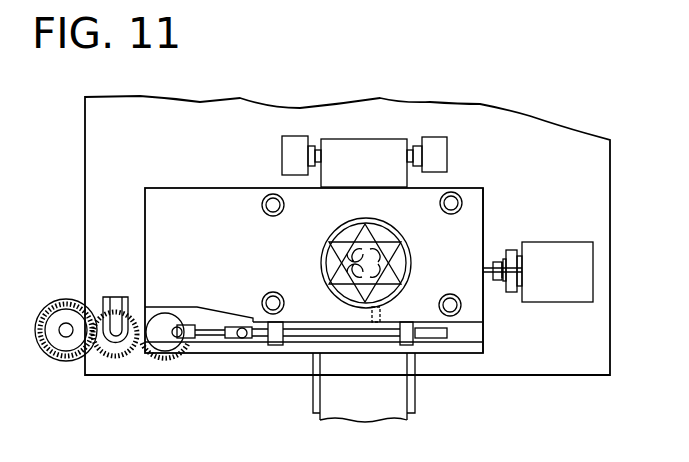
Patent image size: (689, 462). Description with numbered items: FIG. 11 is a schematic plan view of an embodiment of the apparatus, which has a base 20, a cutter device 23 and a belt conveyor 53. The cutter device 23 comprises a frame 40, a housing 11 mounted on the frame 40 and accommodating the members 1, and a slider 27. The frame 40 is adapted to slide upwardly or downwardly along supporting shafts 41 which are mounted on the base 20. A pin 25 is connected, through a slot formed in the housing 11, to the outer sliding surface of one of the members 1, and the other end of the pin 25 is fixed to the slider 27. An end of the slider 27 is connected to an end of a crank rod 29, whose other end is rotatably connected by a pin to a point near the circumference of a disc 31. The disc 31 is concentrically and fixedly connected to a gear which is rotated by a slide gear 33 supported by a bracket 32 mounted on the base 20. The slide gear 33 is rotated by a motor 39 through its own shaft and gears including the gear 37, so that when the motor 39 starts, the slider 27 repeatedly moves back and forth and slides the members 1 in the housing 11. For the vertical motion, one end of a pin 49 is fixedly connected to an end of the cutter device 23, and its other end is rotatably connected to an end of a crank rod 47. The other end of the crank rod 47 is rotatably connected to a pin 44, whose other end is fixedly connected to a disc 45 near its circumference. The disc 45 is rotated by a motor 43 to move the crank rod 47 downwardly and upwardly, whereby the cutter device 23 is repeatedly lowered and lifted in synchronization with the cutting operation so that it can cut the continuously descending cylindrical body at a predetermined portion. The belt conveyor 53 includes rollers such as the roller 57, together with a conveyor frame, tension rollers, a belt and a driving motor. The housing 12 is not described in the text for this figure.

The members 1 is at (380, 236).
The housing 11 is at (412, 268).
The housing 12 is at (425, 246).
The base 20 is at (590, 377).
The cutter device 23 is at (495, 232).
The pin 25 is at (380, 323).
The slider 27 is at (292, 337).
The crank rod 29 is at (213, 339).
The disc 31 is at (164, 340).
The bracket 32 is at (117, 297).
The slide gear 33 is at (130, 365).
The gear 37 is at (62, 315).
The motor 39 is at (60, 361).
The frame 40 is at (165, 187).
The supporting shafts 41 is at (270, 194).
The motor 43 is at (583, 277).
The pin 44 is at (503, 253).
The disc 45 is at (512, 293).
The crank rod 47 is at (500, 280).
The pin 49 is at (492, 282).
The belt conveyor 53 is at (368, 118).
The roller 57 is at (433, 143).